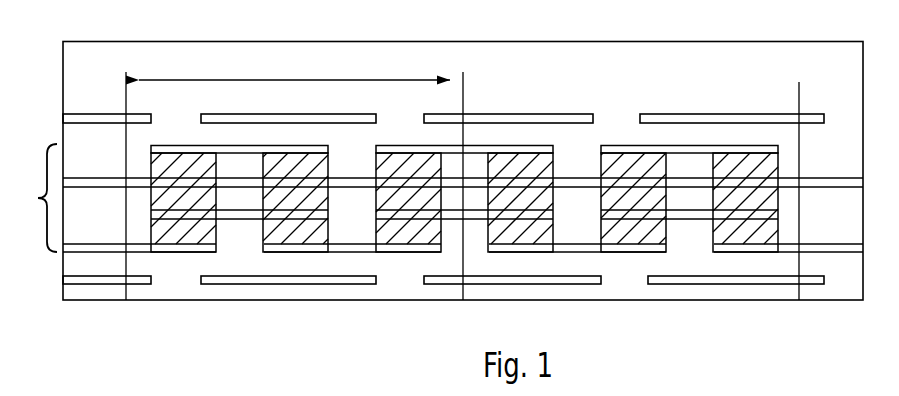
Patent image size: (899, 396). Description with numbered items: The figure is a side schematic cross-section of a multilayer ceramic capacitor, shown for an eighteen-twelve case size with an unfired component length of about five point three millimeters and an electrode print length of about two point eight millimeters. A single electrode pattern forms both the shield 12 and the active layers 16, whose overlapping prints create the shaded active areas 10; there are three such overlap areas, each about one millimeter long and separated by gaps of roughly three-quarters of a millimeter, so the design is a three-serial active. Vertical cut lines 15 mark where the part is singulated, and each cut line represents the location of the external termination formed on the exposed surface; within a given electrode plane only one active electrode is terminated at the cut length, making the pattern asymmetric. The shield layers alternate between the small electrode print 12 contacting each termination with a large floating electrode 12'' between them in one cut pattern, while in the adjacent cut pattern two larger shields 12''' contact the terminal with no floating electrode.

The active areas 10 is at (383, 232).
The shield 12 is at (443, 179).
The large floating electrode 12'' is at (382, 322).
The larger shields 12''' is at (635, 319).
The cut lines 15 is at (126, 72).
The active layers 16 is at (37, 198).